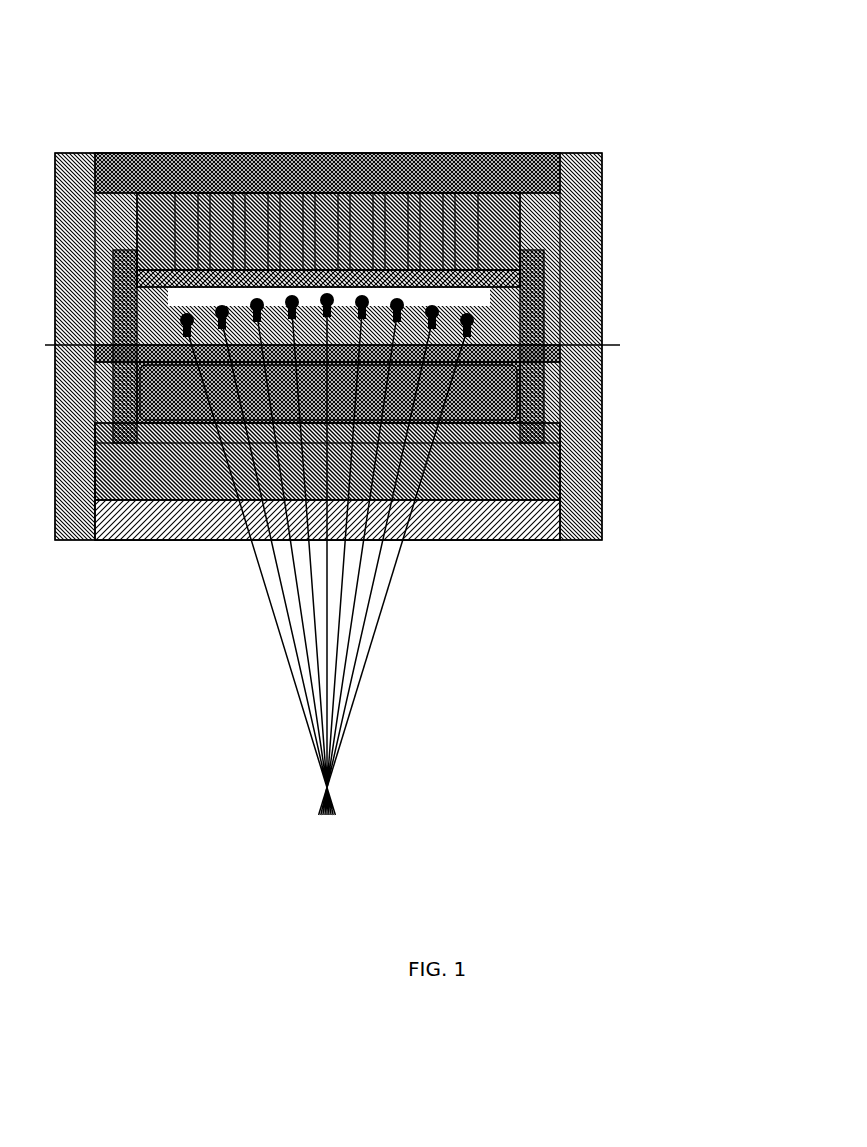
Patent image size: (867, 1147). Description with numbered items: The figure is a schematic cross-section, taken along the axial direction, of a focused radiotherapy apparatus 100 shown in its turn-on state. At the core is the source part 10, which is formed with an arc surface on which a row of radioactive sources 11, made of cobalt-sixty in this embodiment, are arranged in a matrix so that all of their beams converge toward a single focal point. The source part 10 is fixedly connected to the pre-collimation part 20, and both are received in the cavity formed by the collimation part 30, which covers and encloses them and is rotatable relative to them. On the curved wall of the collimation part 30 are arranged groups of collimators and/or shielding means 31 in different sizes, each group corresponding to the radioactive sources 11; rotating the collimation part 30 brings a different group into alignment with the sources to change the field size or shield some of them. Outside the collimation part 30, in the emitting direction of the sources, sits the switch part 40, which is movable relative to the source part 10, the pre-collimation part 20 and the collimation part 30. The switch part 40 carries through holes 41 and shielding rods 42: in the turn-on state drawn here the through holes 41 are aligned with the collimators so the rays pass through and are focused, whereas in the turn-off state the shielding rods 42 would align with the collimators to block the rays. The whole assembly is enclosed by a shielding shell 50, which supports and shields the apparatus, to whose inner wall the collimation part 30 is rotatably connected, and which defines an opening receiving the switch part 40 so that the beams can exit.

The focused radiotherapy apparatus 100 is at (352, 52).
The radioactive sources 11 is at (424, 210).
The collimation part 30 is at (483, 213).
The source part 10 is at (447, 320).
The pre-collimation part 20 is at (545, 372).
The shielding shell 50 is at (560, 424).
The collimators and/or shielding means 31 is at (230, 455).
The through holes 41 is at (268, 495).
The shielding rods 42 is at (268, 585).
The switch part 40 is at (470, 520).